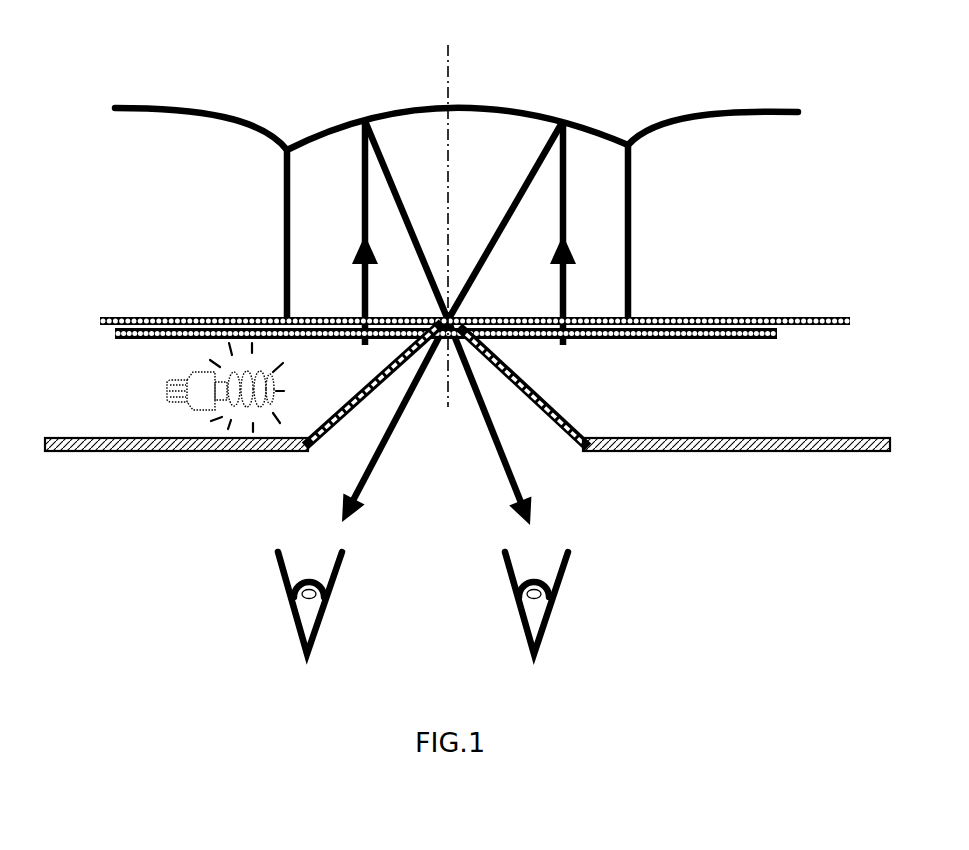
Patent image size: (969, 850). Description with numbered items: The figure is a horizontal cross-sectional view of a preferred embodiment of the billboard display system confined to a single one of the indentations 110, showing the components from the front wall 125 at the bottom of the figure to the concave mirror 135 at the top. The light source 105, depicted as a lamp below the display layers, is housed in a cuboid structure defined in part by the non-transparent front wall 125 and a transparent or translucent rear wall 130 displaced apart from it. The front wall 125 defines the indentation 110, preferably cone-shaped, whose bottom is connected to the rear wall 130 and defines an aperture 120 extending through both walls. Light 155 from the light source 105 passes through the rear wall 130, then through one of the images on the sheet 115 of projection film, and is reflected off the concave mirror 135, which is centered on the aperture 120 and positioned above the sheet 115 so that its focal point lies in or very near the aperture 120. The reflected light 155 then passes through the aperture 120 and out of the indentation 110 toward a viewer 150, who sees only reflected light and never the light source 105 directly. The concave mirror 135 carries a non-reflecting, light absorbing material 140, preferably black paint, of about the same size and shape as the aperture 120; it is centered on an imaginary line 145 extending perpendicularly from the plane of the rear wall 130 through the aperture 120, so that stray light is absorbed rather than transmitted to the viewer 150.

The light source 105 is at (210, 385).
The indentation 110 is at (502, 405).
The sheet of projection film 115 is at (833, 317).
The aperture 120 is at (428, 335).
The front wall 125 is at (857, 453).
The rear wall 130 is at (738, 340).
The concave mirror 135 is at (532, 112).
The non-reflecting, light absorbing material 140 is at (425, 182).
The imaginary line 145 is at (447, 403).
The viewer 150 is at (547, 622).
The light 155 is at (363, 180).